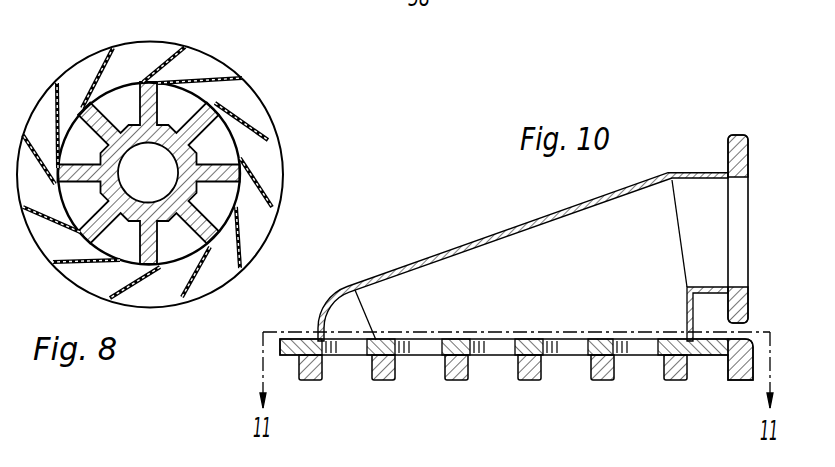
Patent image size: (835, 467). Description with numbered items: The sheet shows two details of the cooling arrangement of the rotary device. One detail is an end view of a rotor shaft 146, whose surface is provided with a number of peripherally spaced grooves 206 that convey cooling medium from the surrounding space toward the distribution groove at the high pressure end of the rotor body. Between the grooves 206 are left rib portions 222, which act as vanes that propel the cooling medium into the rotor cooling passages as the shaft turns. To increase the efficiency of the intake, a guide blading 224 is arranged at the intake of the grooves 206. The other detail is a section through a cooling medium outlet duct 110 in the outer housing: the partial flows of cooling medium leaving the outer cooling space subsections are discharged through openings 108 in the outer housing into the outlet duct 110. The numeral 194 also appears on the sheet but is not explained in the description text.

In FIG. 8, the rotor shaft 146 is at (186, 160).
In FIG. 8, the grooves 206 is at (170, 98).
In FIG. 8, the rib portions 222 is at (147, 88).
In FIG. 8, the guide blading 224 is at (233, 80).
In FIG. 10, the outlet duct 110 is at (548, 243).
In FIG. 10, the openings 108 is at (503, 345).
In FIG. 10, the element 194 is at (541, 0).